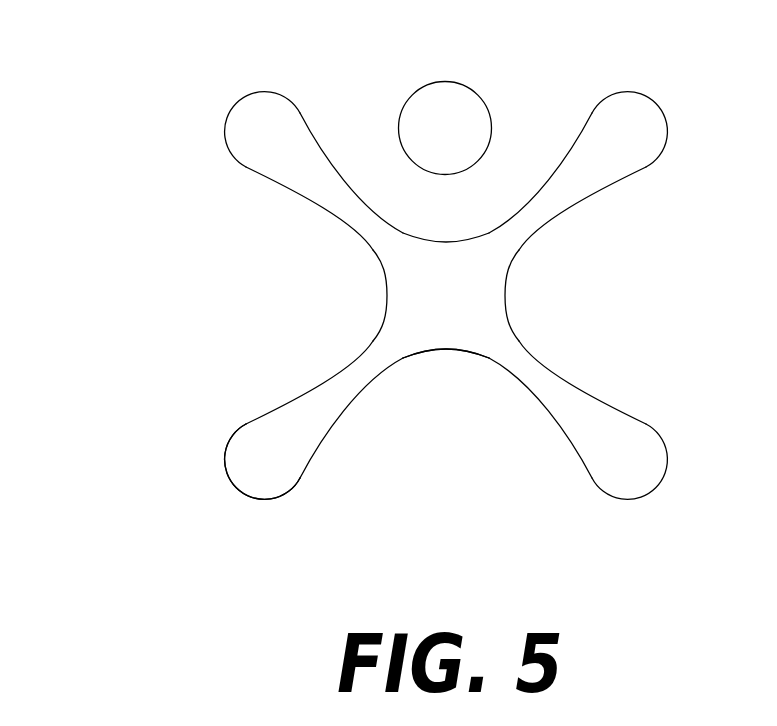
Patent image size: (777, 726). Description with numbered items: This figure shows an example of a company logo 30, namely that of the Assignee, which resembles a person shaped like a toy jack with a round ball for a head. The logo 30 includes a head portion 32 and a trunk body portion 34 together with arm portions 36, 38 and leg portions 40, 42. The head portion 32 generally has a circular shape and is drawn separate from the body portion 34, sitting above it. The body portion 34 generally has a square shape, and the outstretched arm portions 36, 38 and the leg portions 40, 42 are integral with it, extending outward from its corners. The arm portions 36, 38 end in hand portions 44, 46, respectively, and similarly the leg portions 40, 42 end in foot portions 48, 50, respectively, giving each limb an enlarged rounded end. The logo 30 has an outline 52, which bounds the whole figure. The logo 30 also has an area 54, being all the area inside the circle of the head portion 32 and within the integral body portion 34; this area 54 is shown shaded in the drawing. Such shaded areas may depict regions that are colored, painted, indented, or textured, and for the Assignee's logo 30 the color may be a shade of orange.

The logo 30 is at (132, 328).
The head portion 32 is at (403, 102).
The trunk body portion 34 is at (450, 288).
The arm portion 36 is at (330, 198).
The arm portion 38 is at (543, 210).
The leg portion 40 is at (353, 392).
The leg portion 42 is at (548, 398).
The hand portion 44 is at (237, 140).
The hand portion 46 is at (647, 110).
The foot portion 48 is at (253, 490).
The foot portion 50 is at (635, 453).
The outline 52 is at (228, 448).
The area 54 is at (437, 337).